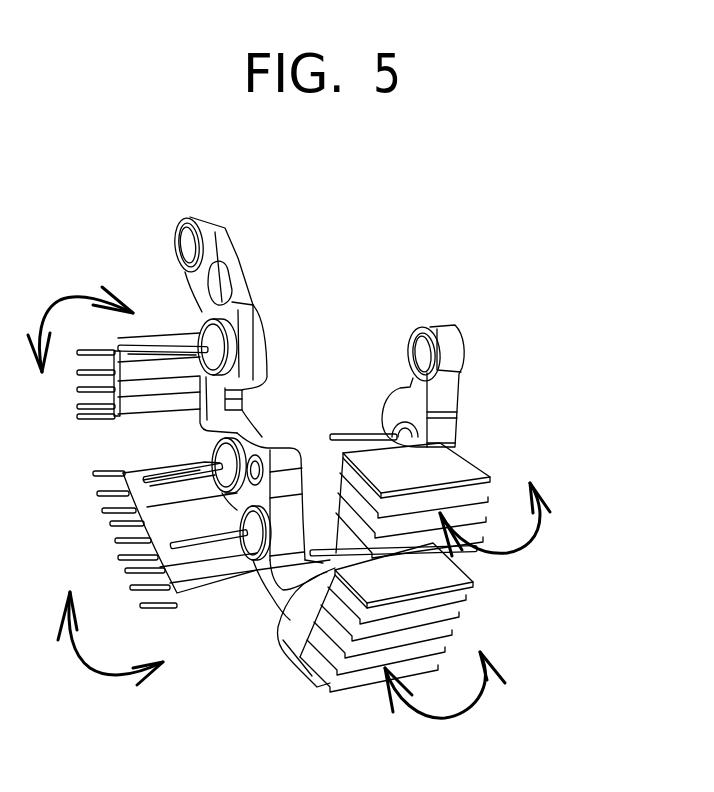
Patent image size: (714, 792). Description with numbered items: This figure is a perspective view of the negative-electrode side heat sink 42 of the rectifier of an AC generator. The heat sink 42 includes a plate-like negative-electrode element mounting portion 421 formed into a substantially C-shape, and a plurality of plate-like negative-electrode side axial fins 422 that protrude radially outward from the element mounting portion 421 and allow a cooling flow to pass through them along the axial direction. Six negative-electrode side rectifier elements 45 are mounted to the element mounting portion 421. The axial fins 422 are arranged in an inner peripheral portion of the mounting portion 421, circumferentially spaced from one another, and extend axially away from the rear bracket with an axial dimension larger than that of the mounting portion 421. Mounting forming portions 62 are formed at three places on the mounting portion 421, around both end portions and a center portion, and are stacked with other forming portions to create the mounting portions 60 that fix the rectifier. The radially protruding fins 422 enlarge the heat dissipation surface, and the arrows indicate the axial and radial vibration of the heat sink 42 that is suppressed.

The negative-electrode side heat sink 42 is at (493, 245).
The negative-electrode element mounting portion 421 is at (252, 465).
The negative-electrode side axial fins 422 is at (455, 468).
The negative-electrode side rectifier elements 45 is at (193, 303).
The mounting portion 60 is at (427, 352).
The mounting forming portion 62 is at (197, 236).